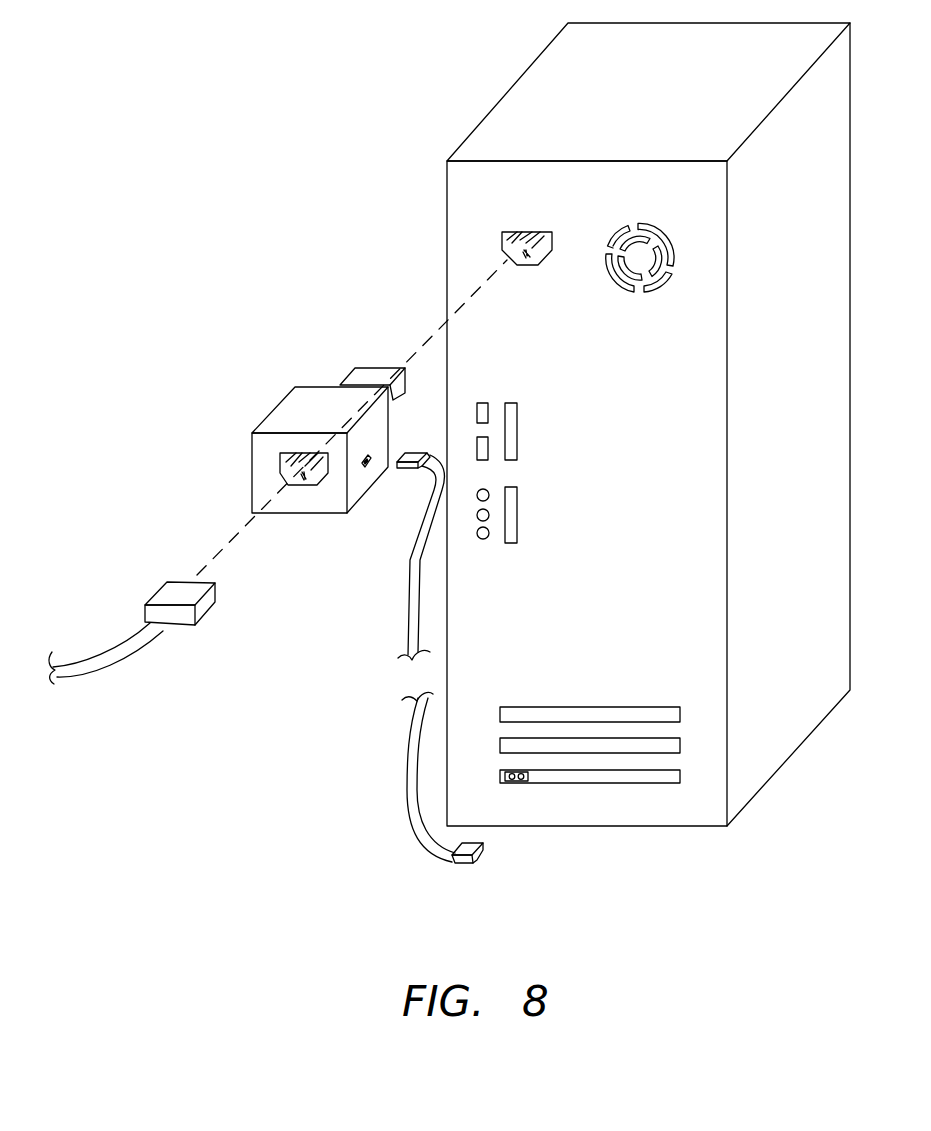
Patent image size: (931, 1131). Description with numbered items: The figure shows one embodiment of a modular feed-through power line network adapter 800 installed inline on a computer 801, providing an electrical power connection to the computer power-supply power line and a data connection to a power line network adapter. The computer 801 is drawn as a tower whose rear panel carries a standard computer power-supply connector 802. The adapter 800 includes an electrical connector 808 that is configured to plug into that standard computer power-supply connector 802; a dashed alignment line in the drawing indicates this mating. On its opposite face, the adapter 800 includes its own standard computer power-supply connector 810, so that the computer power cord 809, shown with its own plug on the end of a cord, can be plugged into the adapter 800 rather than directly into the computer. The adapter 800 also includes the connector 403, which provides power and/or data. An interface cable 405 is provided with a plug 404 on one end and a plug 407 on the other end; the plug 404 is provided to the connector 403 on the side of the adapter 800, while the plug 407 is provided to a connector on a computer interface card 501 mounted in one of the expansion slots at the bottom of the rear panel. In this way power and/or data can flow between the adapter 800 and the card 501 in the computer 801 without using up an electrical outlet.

The computer system 801 is at (452, 85).
The standard computer power-supply connector 802 is at (522, 233).
The modular feed-through power line network adapter 800 is at (303, 398).
The electrical connector 808 is at (375, 372).
The standard computer power-supply connector 810 is at (283, 458).
The connector 403 is at (367, 467).
The plug 404 is at (408, 468).
The interface cable 405 is at (408, 627).
The plug 407 is at (476, 859).
The network interface card 501 is at (607, 777).
The computer power cord 809 is at (182, 592).